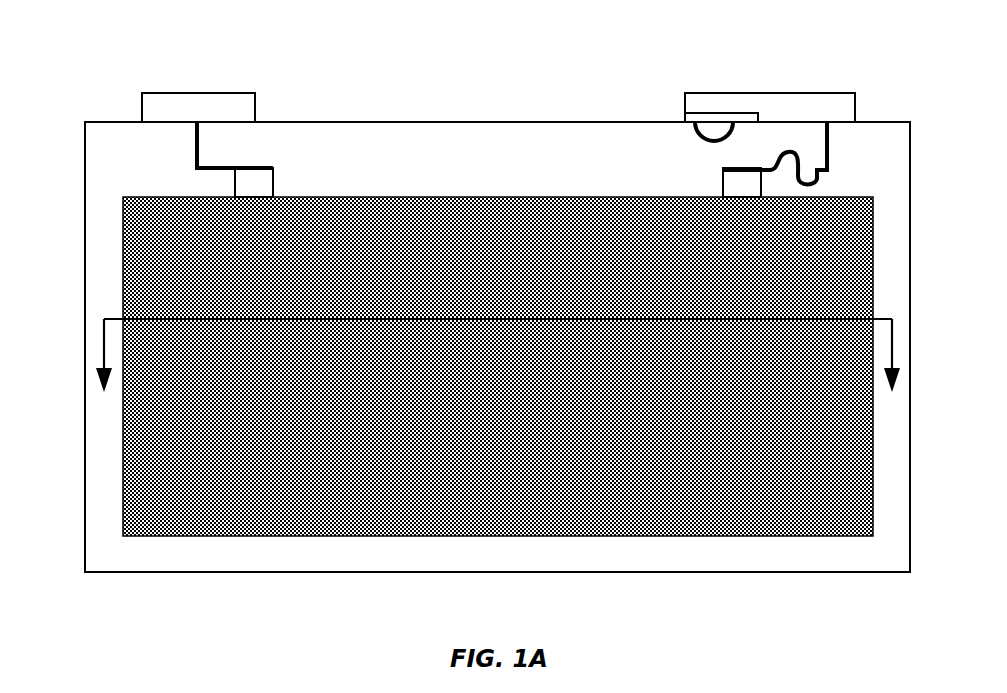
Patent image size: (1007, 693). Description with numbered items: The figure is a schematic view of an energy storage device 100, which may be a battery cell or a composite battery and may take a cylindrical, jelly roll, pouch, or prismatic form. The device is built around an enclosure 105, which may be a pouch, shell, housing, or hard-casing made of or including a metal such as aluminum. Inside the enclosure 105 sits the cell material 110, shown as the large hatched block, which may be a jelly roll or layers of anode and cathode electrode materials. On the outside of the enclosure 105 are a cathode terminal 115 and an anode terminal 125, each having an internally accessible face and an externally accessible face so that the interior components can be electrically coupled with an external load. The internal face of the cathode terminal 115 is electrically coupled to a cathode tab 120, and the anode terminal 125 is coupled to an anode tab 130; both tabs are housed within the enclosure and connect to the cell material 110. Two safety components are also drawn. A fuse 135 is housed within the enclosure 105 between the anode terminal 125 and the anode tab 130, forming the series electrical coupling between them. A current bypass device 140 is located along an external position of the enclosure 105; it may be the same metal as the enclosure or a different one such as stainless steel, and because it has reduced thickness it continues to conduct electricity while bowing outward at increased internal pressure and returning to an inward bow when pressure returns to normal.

The energy storage device 100 is at (100, 88).
The enclosure 105 is at (655, 572).
The cell material 110 is at (516, 536).
The cathode terminal 115 is at (255, 103).
The cathode tab 120 is at (273, 187).
The anode terminal 125 is at (685, 110).
The anode tab 130 is at (722, 193).
The fuse 135 is at (817, 182).
The current bypass device 140 is at (695, 128).